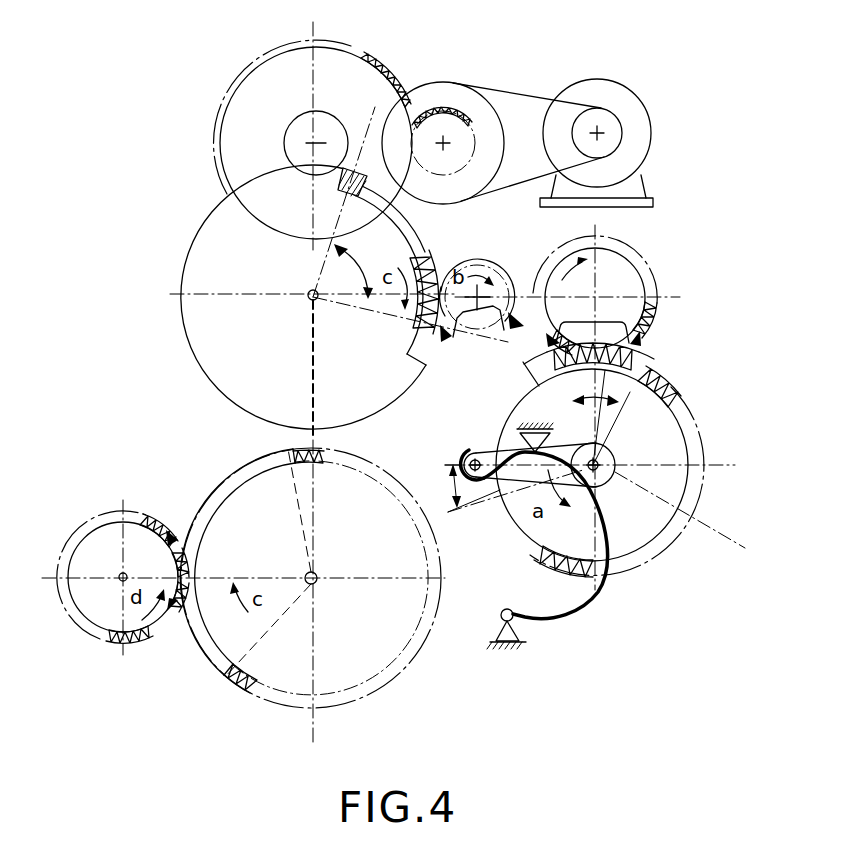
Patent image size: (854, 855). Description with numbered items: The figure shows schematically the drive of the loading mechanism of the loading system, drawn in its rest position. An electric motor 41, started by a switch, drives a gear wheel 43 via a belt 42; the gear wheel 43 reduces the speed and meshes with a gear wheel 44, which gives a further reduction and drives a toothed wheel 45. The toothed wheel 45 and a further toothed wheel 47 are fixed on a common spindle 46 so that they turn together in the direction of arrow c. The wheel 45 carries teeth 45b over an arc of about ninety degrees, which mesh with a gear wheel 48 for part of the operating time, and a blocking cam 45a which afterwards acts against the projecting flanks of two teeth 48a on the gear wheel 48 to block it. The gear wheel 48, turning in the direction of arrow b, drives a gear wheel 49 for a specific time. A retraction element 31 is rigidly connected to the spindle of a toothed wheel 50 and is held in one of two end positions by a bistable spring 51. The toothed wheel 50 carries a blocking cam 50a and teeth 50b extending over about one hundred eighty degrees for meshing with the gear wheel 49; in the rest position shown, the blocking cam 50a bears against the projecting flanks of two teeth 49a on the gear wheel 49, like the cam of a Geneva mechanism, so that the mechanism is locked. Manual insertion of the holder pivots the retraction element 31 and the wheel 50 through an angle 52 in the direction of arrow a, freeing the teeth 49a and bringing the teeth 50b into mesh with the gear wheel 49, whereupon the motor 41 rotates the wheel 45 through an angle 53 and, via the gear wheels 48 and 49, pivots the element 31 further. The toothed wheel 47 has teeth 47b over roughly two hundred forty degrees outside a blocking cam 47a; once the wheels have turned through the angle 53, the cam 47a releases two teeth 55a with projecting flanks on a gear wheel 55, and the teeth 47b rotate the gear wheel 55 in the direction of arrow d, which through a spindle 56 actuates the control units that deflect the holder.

The retraction element 31 is at (488, 458).
The electric motor 41 is at (651, 126).
The belt 42 is at (512, 88).
The gear wheel 43 is at (447, 95).
The gear wheel 44 is at (352, 82).
The toothed wheel 45 is at (222, 230).
The blocking cam 45a is at (396, 386).
The teeth 45b is at (422, 253).
The spindle 46 is at (309, 337).
The toothed wheel 47 is at (347, 680).
The blocking cam 47a is at (237, 470).
The teeth 47b is at (268, 690).
The gear wheel 48 is at (494, 256).
The teeth 48a is at (448, 343).
The gear wheel 49 is at (640, 268).
The teeth 49a is at (507, 345).
The toothed wheel 50 is at (692, 440).
The blocking cam 50a is at (648, 358).
The teeth 50b is at (670, 382).
The bistable spring 51 is at (562, 622).
The angle 52 is at (605, 423).
The angle 53 is at (361, 270).
The gear wheel 55 is at (95, 522).
The teeth 55a is at (172, 528).
The spindle 56 is at (120, 587).